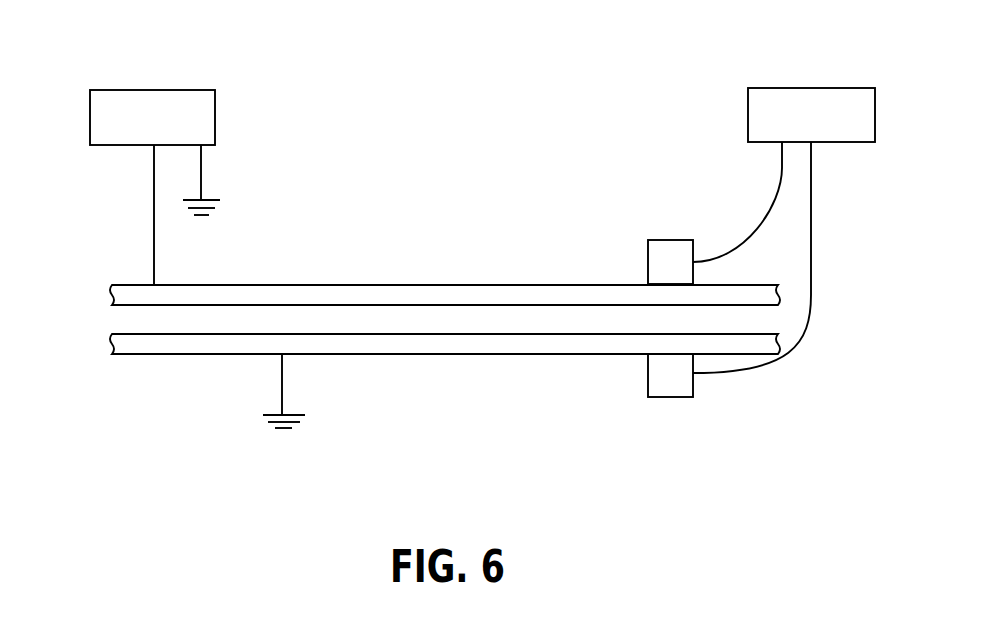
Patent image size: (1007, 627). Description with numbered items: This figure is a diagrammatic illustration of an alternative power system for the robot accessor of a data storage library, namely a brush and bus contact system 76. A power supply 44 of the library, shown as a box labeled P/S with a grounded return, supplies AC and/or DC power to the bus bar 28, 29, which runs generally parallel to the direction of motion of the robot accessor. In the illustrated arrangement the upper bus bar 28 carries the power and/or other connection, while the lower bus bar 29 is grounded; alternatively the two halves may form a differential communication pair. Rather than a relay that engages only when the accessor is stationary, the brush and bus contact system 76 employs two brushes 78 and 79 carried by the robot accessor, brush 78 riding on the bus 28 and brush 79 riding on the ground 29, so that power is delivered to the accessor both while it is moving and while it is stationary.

The power supply 44 is at (138, 90).
The bus bar 28 is at (106, 295).
The bus bar 29 is at (106, 350).
The brush and bus contact system 76 is at (782, 88).
The brush 78 is at (658, 240).
The brush 79 is at (662, 397).